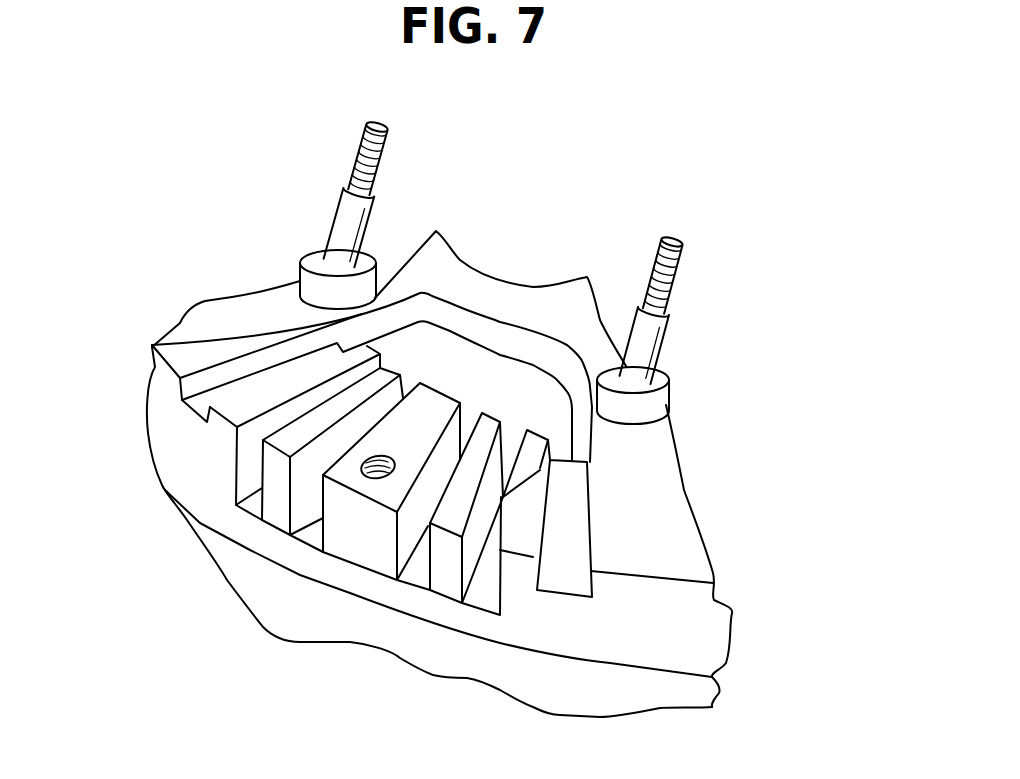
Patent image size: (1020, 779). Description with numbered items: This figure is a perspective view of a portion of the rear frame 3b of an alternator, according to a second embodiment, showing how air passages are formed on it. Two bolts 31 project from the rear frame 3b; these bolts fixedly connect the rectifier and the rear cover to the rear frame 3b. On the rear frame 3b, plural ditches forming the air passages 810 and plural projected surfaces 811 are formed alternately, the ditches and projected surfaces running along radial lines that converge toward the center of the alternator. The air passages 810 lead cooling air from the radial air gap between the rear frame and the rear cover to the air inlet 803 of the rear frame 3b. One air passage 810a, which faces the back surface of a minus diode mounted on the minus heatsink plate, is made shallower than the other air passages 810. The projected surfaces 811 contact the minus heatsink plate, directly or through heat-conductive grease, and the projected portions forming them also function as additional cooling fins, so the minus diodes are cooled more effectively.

The rear frame 3b is at (693, 637).
The bolt 31 is at (343, 228).
The air inlet 803 is at (478, 372).
The air passage 810 is at (311, 512).
The air passage 810a is at (212, 407).
The projected surface 811 is at (385, 382).